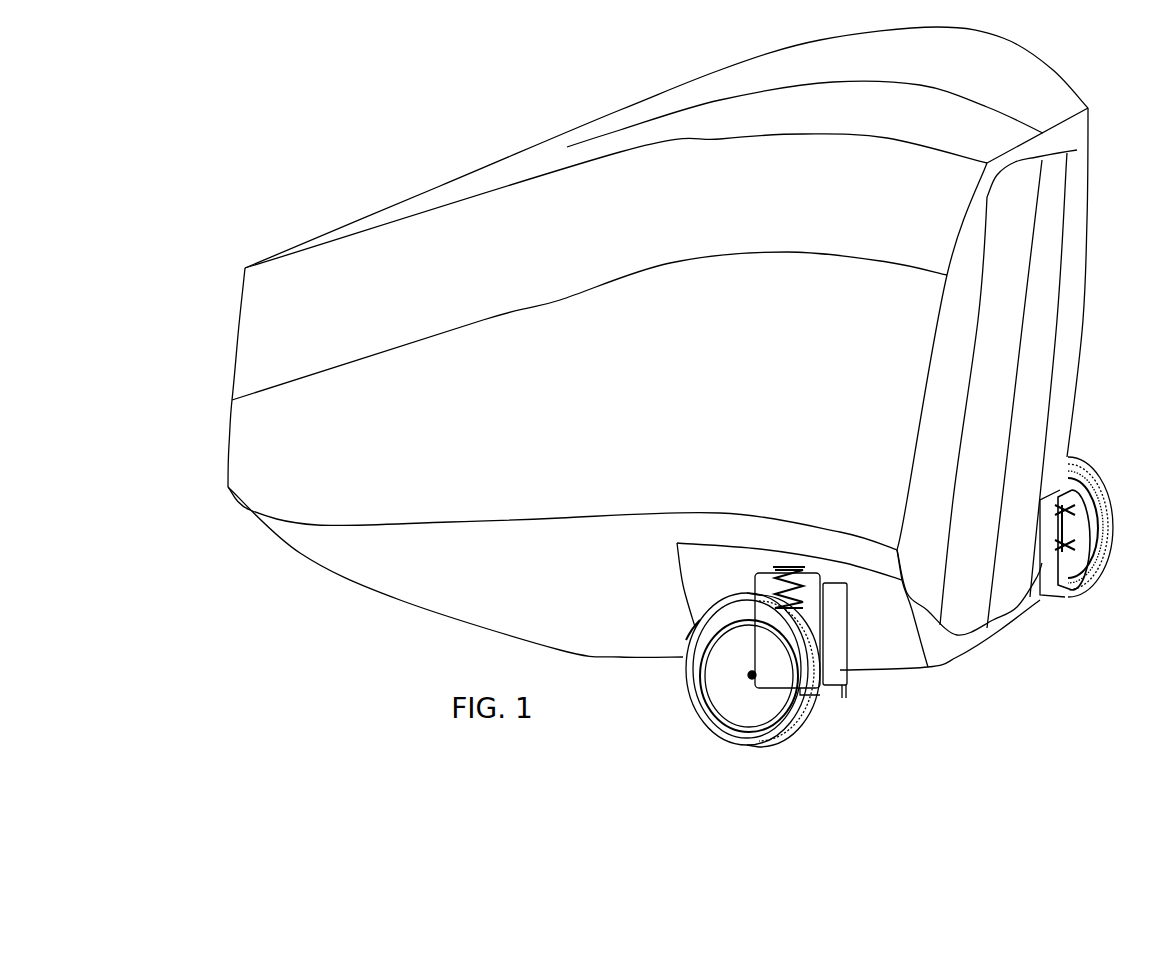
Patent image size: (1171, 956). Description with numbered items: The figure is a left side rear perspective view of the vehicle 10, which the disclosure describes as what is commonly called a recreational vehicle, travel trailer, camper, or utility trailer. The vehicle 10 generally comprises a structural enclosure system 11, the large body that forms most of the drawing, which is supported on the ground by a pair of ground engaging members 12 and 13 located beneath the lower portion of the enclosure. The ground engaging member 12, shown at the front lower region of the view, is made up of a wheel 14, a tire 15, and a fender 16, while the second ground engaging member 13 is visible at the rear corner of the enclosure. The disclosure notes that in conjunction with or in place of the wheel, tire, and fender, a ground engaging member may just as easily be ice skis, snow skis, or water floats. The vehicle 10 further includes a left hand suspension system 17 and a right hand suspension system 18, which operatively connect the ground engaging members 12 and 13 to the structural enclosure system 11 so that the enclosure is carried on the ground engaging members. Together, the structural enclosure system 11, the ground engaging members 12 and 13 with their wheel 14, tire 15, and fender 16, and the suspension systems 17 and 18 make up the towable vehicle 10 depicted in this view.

The vehicle 10 is at (392, 170).
The structural enclosure system 11 is at (427, 570).
The ground engaging member 12 is at (230, 500).
The ground engaging member 13 is at (1103, 477).
The wheel 14 is at (755, 737).
The tire 15 is at (723, 690).
The fender 16 is at (685, 640).
The left hand suspension system 17 is at (838, 652).
The right hand suspension system 18 is at (1060, 535).